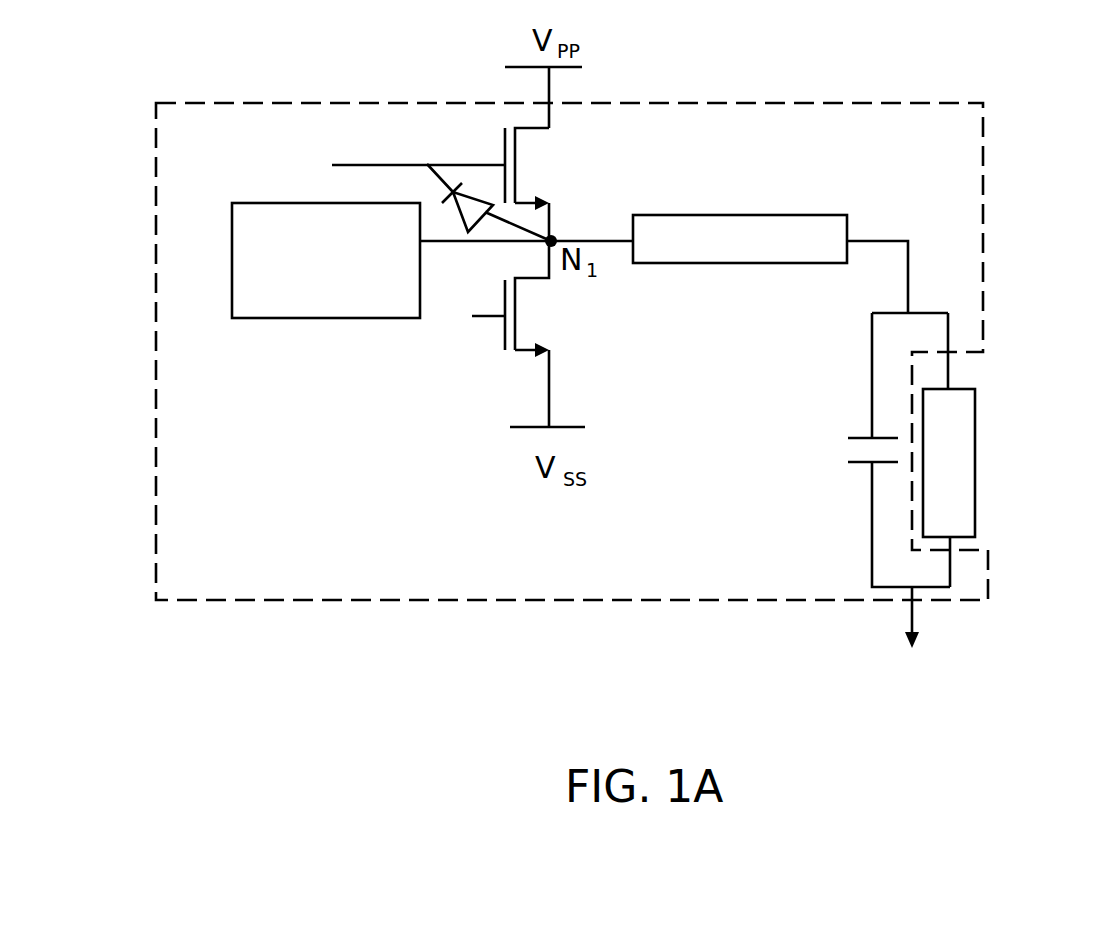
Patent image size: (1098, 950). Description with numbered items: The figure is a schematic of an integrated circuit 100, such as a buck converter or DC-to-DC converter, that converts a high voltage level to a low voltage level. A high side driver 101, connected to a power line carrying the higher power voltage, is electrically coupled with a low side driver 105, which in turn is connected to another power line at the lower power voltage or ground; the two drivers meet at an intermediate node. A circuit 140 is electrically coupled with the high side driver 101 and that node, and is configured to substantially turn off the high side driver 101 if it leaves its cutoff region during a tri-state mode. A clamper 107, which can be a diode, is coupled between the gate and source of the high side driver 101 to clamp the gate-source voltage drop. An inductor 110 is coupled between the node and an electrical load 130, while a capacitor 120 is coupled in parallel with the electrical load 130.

The integrated circuit 100 is at (992, 132).
The high side driver 101 is at (566, 162).
The low side driver 105 is at (568, 317).
The clamper 107 is at (453, 209).
The inductor 110 is at (836, 259).
The capacitor 120 is at (828, 448).
The electrical load 130 is at (975, 448).
The circuit 140 is at (355, 302).